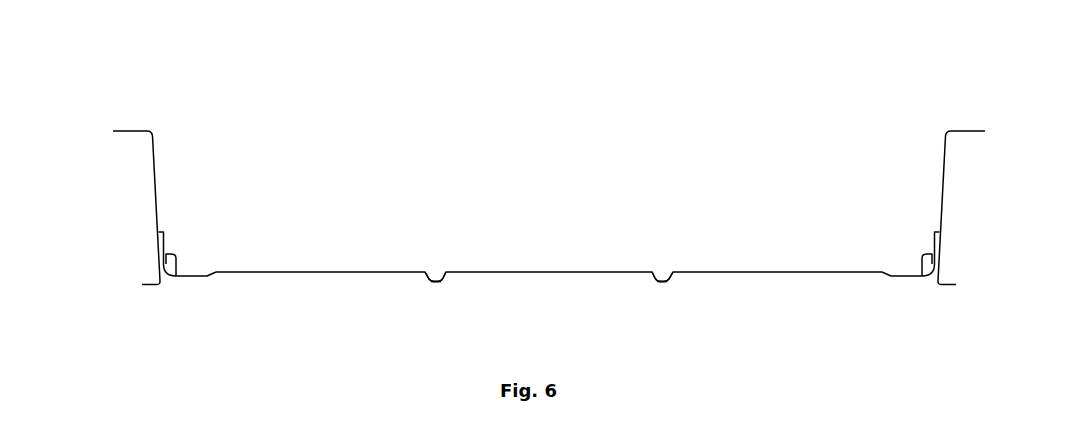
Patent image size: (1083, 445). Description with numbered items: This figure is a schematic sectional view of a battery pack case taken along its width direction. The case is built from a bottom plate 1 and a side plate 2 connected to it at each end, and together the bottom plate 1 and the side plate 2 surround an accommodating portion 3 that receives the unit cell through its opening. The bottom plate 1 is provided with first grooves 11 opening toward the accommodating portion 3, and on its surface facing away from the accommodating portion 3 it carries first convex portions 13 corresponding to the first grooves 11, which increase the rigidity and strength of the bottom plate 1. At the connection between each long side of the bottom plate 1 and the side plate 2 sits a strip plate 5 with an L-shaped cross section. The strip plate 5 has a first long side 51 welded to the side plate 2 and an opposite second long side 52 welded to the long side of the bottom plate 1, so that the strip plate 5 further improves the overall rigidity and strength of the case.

The bottom plate 1 is at (335, 273).
The side plate 2 is at (158, 194).
The accommodating portion 3 is at (525, 207).
The strip plate 5 is at (549, 236).
The first grooves 11 is at (435, 271).
The first convex portions 13 is at (433, 279).
The first long side 51 is at (165, 242).
The second long side 52 is at (194, 273).